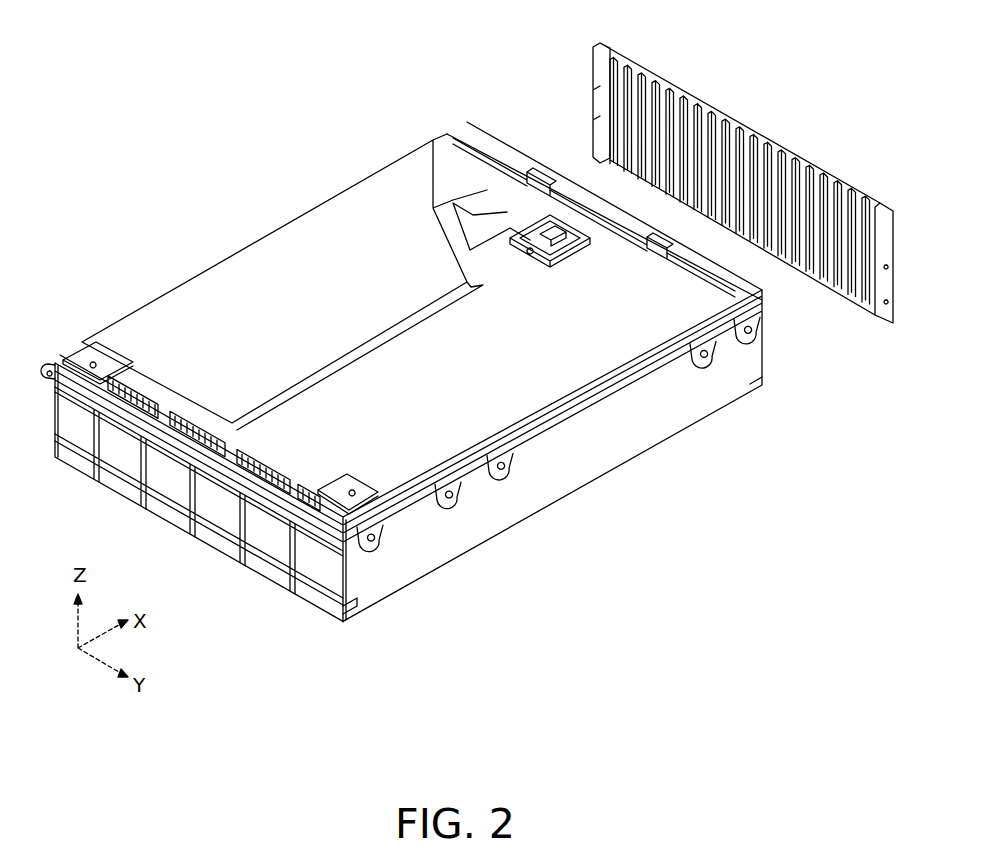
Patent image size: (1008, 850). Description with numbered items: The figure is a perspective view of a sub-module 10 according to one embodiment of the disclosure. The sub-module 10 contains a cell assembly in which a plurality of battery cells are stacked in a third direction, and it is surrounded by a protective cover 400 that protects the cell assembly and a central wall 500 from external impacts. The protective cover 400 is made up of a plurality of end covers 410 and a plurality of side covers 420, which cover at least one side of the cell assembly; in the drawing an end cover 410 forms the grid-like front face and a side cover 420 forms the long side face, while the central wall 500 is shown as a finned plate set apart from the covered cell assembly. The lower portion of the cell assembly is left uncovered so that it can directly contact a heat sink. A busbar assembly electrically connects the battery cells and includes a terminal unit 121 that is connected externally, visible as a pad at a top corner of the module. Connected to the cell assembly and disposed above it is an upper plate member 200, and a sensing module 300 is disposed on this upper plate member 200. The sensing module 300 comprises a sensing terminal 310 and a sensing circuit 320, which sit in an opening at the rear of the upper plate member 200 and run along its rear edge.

The sub-module 10 is at (127, 91).
The terminal unit 121 is at (83, 357).
The upper plate member 200 is at (283, 243).
The sensing module 300 is at (535, 65).
The sensing terminal 310 is at (563, 225).
The sensing circuit 320 is at (452, 203).
The protective cover 400 is at (412, 706).
The end cover 410 is at (279, 568).
The side cover 420 is at (386, 590).
The central wall 500 is at (877, 318).